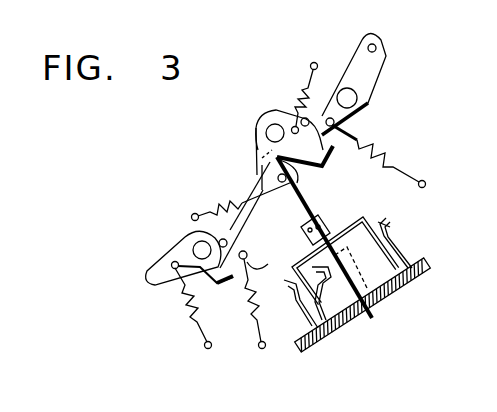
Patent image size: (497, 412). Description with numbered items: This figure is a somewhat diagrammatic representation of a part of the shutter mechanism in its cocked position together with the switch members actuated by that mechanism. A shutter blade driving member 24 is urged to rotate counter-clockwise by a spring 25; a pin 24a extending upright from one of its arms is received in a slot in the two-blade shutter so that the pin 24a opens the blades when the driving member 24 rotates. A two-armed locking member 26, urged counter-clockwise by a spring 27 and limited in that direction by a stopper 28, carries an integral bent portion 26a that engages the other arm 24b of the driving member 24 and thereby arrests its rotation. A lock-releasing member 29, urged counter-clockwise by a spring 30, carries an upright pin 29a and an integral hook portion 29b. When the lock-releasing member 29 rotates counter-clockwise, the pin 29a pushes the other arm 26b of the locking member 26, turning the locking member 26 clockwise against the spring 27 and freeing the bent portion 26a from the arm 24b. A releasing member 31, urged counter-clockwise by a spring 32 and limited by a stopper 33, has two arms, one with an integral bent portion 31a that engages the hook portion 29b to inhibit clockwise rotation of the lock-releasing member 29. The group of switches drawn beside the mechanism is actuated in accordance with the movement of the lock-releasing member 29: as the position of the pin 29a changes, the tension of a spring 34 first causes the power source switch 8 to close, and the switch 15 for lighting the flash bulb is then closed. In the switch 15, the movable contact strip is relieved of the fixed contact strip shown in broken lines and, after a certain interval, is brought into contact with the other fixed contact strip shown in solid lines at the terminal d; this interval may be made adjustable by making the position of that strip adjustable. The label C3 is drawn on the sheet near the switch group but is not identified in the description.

The shutter blade driving member 24 is at (373, 64).
The pin 24a is at (377, 46).
The other arm of the driving member 24b is at (350, 127).
The spring 25 is at (375, 145).
The locking member 26 is at (273, 122).
The bent portion 26a is at (318, 145).
The other arm of the locking member 26b is at (258, 143).
The spring 27 is at (305, 88).
The stopper 28 is at (290, 113).
The lock-releasing member 29 is at (258, 200).
The pin 29a is at (300, 183).
The hook portion 29b is at (228, 286).
The spring 30 is at (263, 300).
The releasing member 31 is at (185, 247).
The bent portion 31a is at (178, 276).
The spring 32 is at (195, 322).
The stopper 33 is at (191, 218).
The spring 34 is at (230, 203).
The power source switch 8 is at (330, 340).
The terminal d is at (350, 327).
The switch 15 is at (353, 323).
The contact C3 is at (418, 292).